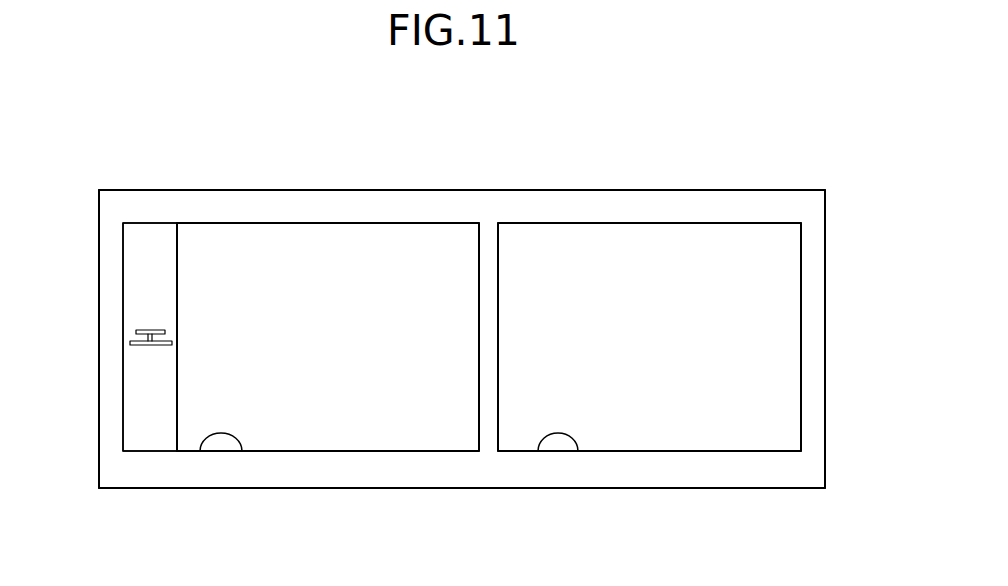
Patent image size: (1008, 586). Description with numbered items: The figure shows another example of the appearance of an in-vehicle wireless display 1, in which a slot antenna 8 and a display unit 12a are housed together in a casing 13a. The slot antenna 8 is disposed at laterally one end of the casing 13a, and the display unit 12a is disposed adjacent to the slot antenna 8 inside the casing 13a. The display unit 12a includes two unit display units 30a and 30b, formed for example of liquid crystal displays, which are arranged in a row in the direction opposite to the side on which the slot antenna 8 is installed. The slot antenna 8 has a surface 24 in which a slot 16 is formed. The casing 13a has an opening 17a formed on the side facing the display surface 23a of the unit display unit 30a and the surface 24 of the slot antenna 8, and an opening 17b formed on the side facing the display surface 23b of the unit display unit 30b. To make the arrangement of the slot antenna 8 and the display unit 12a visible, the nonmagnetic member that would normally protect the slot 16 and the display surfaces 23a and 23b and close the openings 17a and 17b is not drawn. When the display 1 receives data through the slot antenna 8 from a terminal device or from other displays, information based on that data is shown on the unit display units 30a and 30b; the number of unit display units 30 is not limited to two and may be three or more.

The display 1 is at (370, 132).
The display unit 12a is at (486, 212).
The casing 13a is at (813, 272).
The slot 16 is at (145, 328).
The slot antenna 8 is at (136, 367).
The surface 24 is at (152, 388).
The opening 17a is at (242, 447).
The opening 17b is at (578, 450).
The display surface 23a is at (310, 383).
The display surface 23b is at (630, 383).
The unit display unit 30a is at (383, 417).
The unit display unit 30b is at (704, 420).
The unit display unit 30 is at (489, 337).